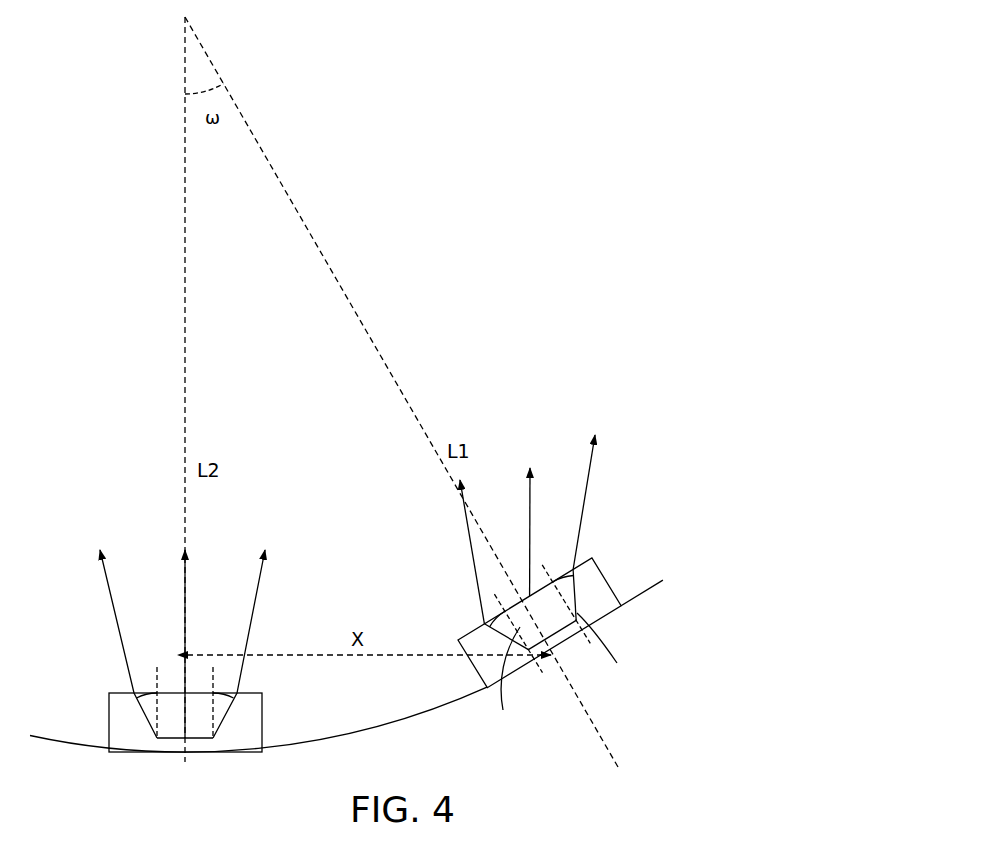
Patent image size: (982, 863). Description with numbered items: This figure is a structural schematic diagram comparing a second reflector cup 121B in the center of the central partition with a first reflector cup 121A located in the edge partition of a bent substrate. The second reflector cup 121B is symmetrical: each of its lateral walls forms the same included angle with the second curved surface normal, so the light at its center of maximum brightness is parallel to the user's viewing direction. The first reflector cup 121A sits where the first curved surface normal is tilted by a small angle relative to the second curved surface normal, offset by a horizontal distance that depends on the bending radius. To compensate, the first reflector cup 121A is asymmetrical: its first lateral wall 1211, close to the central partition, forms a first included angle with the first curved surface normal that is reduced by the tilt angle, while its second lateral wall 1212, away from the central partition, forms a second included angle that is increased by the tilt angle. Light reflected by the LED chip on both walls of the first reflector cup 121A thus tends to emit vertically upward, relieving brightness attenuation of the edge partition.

The first reflector cup 121A is at (554, 580).
The second reflector cup 121B is at (262, 710).
The first lateral wall 1211 is at (484, 627).
The second lateral wall 1212 is at (556, 598).